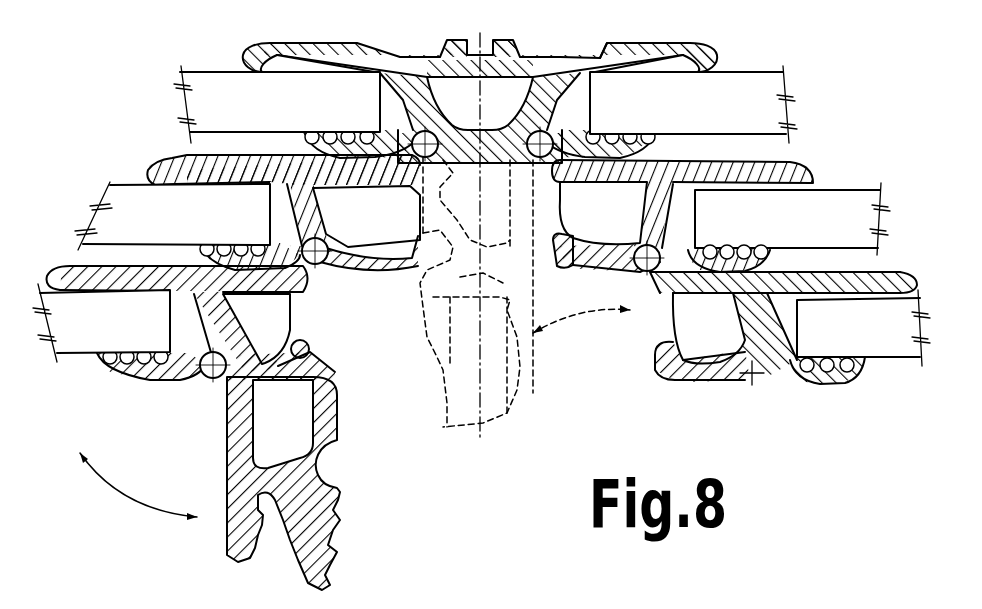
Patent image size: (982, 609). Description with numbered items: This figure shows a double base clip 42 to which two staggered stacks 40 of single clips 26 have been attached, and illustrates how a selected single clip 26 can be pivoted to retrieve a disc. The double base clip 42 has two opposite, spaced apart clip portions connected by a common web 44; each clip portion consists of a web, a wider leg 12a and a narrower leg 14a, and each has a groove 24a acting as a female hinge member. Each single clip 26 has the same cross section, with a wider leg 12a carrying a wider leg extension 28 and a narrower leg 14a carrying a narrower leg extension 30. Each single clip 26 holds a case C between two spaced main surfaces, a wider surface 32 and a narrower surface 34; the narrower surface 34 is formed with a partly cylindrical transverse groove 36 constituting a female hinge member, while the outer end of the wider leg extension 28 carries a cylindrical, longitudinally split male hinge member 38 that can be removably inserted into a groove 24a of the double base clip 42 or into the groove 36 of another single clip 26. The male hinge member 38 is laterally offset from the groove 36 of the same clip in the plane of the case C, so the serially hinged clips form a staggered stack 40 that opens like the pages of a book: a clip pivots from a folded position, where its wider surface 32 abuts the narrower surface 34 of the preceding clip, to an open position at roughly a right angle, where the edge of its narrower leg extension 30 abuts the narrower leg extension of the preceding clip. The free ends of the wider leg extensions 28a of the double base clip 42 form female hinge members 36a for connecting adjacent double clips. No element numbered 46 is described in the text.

The wider leg 12a is at (783, 272).
The narrower leg 14a is at (820, 373).
The groove female hinge member 24a is at (403, 187).
The single clip 26 is at (810, 157).
The wider leg extension 28 is at (680, 293).
The wider leg extension 28a is at (493, 38).
The narrower leg extension 30 is at (307, 342).
The wider surface 32 is at (783, 272).
The narrower surface 34 is at (710, 383).
The transverse groove 36 is at (202, 378).
The complementary female hinge member 36a is at (253, 57).
The complementary male hinge member 38 is at (630, 283).
The staggered stack 40 is at (152, 524).
The double base clip 42 is at (622, 38).
The common web 44 is at (514, 34).
The stop lug 46 is at (517, 50).
The case C is at (757, 97).